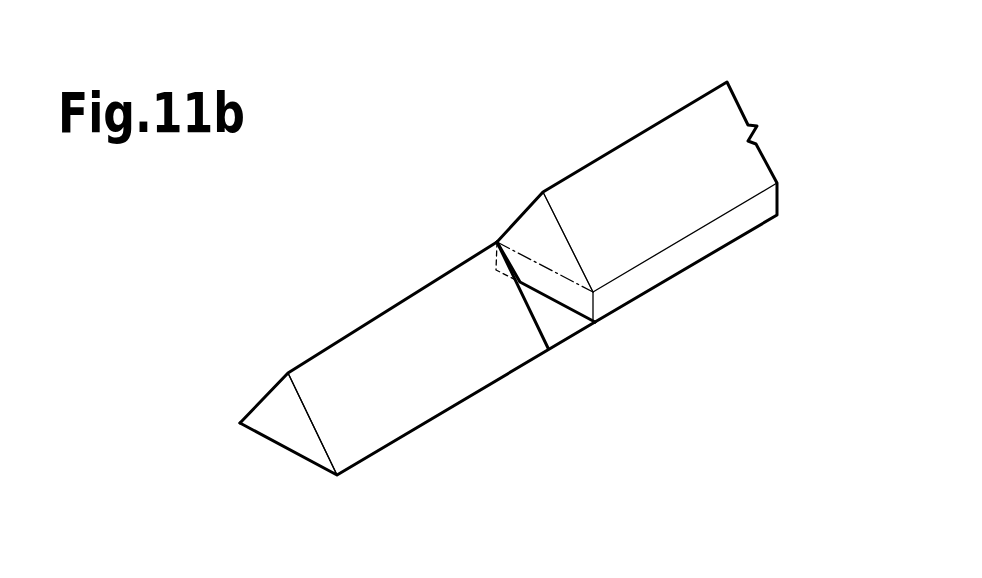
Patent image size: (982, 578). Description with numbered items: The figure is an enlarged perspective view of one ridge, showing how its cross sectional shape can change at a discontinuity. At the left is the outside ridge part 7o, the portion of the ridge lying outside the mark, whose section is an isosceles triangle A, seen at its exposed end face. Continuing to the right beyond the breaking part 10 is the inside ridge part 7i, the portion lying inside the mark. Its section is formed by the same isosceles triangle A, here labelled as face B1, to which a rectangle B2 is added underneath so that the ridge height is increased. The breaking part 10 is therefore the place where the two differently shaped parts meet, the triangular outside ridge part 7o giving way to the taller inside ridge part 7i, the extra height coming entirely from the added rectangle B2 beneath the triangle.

The outside ridge part 7o is at (382, 313).
The inside ridge part 7i is at (650, 125).
The isosceles triangle A is at (292, 429).
The cut face B1 (A) of inner part B1 is at (548, 245).
The rectangle B2 is at (580, 300).
The breaking part 10 is at (555, 323).